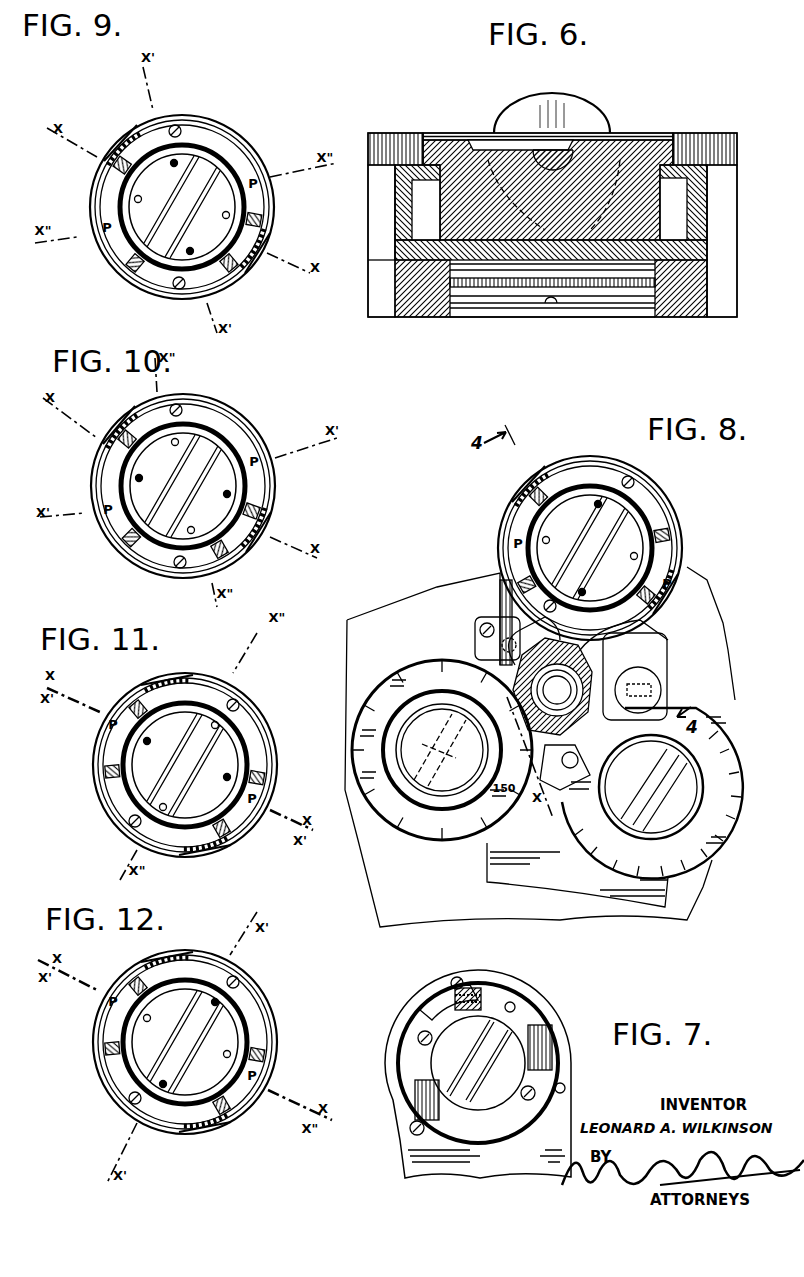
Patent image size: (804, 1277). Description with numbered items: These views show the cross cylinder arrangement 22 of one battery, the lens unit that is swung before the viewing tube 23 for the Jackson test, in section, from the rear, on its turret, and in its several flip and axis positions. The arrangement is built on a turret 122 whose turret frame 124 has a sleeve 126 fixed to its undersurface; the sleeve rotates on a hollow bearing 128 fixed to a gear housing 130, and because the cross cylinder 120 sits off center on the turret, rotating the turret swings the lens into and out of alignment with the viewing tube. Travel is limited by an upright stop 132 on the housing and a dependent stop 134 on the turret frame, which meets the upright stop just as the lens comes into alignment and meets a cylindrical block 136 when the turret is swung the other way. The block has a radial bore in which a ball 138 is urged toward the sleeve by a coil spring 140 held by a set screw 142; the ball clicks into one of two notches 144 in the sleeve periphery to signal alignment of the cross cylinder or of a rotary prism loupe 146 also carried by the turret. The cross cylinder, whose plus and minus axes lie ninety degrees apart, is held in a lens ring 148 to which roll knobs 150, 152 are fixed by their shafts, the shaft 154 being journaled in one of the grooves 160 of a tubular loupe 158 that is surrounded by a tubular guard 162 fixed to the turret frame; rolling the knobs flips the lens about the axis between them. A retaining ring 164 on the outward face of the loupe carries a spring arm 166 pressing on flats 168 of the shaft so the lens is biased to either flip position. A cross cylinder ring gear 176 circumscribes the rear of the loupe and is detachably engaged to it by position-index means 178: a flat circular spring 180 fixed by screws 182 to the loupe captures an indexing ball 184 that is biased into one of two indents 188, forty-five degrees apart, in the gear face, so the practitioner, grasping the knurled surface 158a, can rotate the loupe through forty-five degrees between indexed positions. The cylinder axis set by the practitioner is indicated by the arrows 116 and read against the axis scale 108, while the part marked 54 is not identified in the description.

In FIG. 8, the cross cylinder arrangement 22 is at (715, 688).
In FIG. 8, the viewing tube 23 is at (375, 830).
In FIG. 8, the inner dial 54 is at (442, 750).
In FIG. 8, the axis scale 108 is at (347, 778).
In FIG. 8, the arrows 116 is at (440, 748).
In FIG. 9, the cross cylinder 120 is at (182, 207).
In FIG. 10, the cross cylinder 120 is at (183, 486).
In FIG. 11, the cross cylinder 120 is at (185, 765).
In FIG. 12, the cross cylinder 120 is at (185, 1042).
In FIG. 8, the cross cylinder 120 is at (590, 553).
In FIG. 7, the cross cylinder 120 is at (482, 1082).
In FIG. 8, the turret 122 is at (678, 793).
In FIG. 6, the turret frame 124 is at (418, 305).
In FIG. 8, the turret frame 124 is at (488, 580).
In FIG. 7, the turret frame 124 is at (395, 1178).
In FIG. 8, the sleeve 126 is at (559, 767).
In FIG. 8, the hollow bearing 128 is at (492, 700).
In FIG. 8, the gear housing 130 is at (497, 877).
In FIG. 8, the upright stop 132 is at (557, 780).
In FIG. 8, the dependent stop 134 is at (500, 645).
In FIG. 8, the cylindrical block 136 is at (668, 652).
In FIG. 8, the ball 138 is at (587, 717).
In FIG. 8, the coil spring 140 is at (651, 787).
In FIG. 8, the set screw 142 is at (660, 678).
In FIG. 8, the notches 144 is at (526, 667).
In FIG. 8, the rotary prism loupe 146 is at (732, 743).
In FIG. 9, the lens ring 148 is at (196, 196).
In FIG. 10, the lens ring 148 is at (195, 474).
In FIG. 11, the lens ring 148 is at (212, 763).
In FIG. 12, the lens ring 148 is at (223, 1040).
In FIG. 8, the lens ring 148 is at (624, 544).
In FIG. 9, the roll knob 150 is at (276, 248).
In FIG. 10, the roll knob 150 is at (278, 524).
In FIG. 11, the roll knob 150 is at (216, 857).
In FIG. 12, the roll knob 150 is at (217, 1136).
In FIG. 8, the roll knob 150 is at (547, 469).
In FIG. 9, the roll knob 152 is at (115, 135).
In FIG. 10, the roll knob 152 is at (114, 420).
In FIG. 11, the roll knob 152 is at (167, 661).
In FIG. 12, the roll knob 152 is at (171, 940).
In FIG. 6, the roll knob 152 is at (570, 105).
In FIG. 8, the roll knob 152 is at (681, 594).
In FIG. 6, the shaft 154 is at (605, 132).
In FIG. 6, the tubular loupe 158 is at (660, 125).
In FIG. 7, the tubular loupe 158 is at (468, 1015).
In FIG. 6, the knurled surface 158a is at (382, 135).
In FIG. 6, the grooves 160 is at (551, 210).
In FIG. 9, the tubular guard 162 is at (204, 207).
In FIG. 10, the tubular guard 162 is at (208, 486).
In FIG. 11, the tubular guard 162 is at (188, 760).
In FIG. 12, the tubular guard 162 is at (205, 1042).
In FIG. 6, the tubular guard 162 is at (393, 218).
In FIG. 8, the tubular guard 162 is at (590, 548).
In FIG. 9, the retaining ring 164 is at (209, 196).
In FIG. 10, the retaining ring 164 is at (211, 480).
In FIG. 11, the retaining ring 164 is at (185, 738).
In FIG. 12, the retaining ring 164 is at (202, 1030).
In FIG. 6, the retaining ring 164 is at (640, 130).
In FIG. 8, the retaining ring 164 is at (607, 537).
In FIG. 6, the spring arm 166 is at (512, 130).
In FIG. 6, the flats 168 is at (550, 150).
In FIG. 6, the cross cylinder ring gear 176 is at (520, 292).
In FIG. 7, the cross cylinder ring gear 176 is at (438, 995).
In FIG. 6, the position-index means 178 is at (544, 332).
In FIG. 6, the flat circular spring 180 is at (478, 310).
In FIG. 7, the flat circular spring 180 is at (505, 1138).
In FIG. 7, the screws 182 is at (535, 1090).
In FIG. 6, the indexing ball 184 is at (552, 310).
In FIG. 7, the indexing ball 184 is at (514, 1002).
In FIG. 7, the indents 188 is at (472, 990).